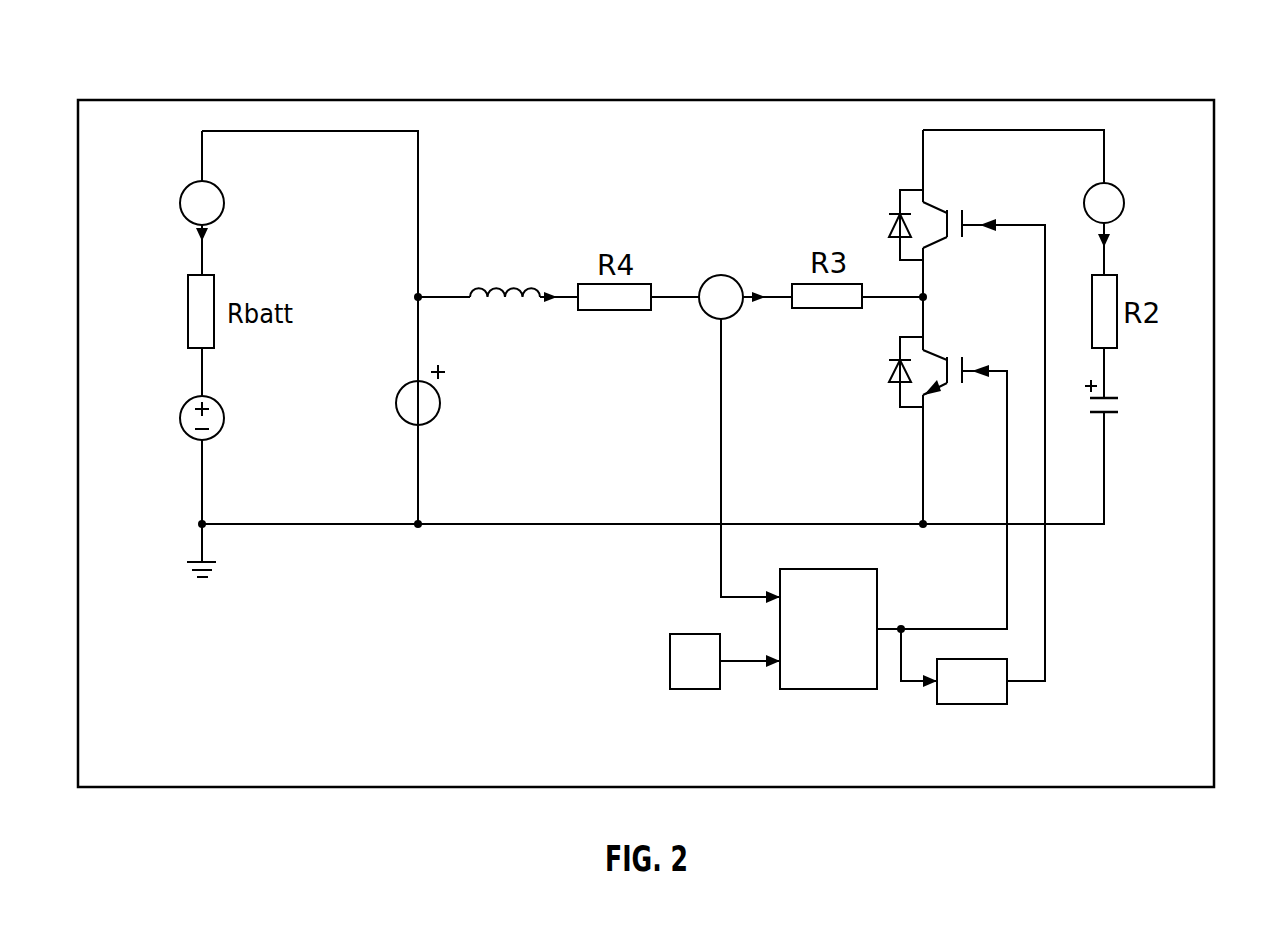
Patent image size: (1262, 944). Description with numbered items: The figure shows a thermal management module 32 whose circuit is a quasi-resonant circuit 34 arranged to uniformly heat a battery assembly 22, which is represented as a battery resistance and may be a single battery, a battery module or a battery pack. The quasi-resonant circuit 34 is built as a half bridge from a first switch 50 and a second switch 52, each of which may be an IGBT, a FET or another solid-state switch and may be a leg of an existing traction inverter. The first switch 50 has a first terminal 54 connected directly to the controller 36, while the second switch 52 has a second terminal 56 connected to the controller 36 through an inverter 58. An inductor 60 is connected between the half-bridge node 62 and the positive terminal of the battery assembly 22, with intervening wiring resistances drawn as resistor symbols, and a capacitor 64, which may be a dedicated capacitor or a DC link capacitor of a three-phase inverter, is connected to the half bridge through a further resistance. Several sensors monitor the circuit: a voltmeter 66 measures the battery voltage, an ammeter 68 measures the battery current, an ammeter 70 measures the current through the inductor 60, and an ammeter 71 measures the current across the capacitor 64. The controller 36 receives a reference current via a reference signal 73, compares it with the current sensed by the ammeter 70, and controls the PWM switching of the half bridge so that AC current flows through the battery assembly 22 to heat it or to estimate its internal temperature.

The thermal management module 32 is at (1197, 53).
The quasi-resonant circuit 34 is at (1160, 100).
The battery assembly 22 is at (214, 400).
The ammeter 68 is at (212, 184).
The voltmeter 66 is at (436, 388).
The inductor 60 is at (530, 310).
The ammeter 70 is at (708, 314).
The first switch 50 is at (900, 197).
The first terminal 54 is at (963, 217).
The node 62 is at (921, 301).
The second switch 52 is at (898, 397).
The second terminal 56 is at (963, 376).
The ammeter 71 is at (1119, 188).
The capacitor 64 is at (1110, 415).
The controller 36 is at (865, 690).
The reference signal 73 is at (670, 661).
The inverter 58 is at (1008, 692).